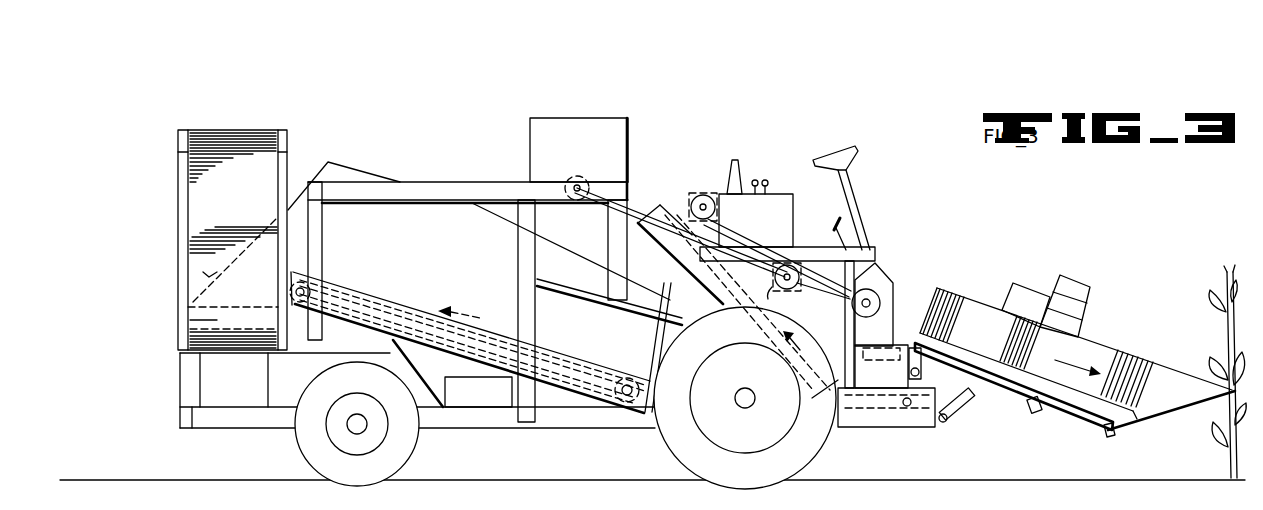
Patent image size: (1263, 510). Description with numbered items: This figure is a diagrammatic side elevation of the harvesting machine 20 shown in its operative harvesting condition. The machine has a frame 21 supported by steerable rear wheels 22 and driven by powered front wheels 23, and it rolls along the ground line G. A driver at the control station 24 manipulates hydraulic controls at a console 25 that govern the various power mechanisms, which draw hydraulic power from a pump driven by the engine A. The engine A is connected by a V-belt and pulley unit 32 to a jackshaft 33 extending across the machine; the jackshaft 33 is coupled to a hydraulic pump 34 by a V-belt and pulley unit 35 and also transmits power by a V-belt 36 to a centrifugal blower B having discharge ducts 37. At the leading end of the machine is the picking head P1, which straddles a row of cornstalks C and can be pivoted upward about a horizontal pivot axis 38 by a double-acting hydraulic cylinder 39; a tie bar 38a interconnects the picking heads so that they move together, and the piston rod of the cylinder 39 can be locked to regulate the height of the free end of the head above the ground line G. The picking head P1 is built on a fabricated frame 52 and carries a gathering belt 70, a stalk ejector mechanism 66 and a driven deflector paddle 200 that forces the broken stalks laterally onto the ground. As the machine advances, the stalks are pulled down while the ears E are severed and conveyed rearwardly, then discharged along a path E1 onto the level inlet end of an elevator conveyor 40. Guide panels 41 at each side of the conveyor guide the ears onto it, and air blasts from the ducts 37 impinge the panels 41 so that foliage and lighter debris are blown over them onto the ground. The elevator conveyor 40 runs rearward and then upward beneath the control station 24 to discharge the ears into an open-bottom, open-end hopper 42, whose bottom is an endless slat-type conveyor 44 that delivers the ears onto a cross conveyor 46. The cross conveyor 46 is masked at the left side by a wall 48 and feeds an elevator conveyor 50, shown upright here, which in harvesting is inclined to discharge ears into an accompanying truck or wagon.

The harvesting machine 20 is at (842, 107).
The frame 21 is at (196, 428).
The steerable rear wheels 22 is at (300, 455).
The powered front wheels 23 is at (672, 447).
The control station 24 is at (862, 178).
The console 25 is at (790, 190).
The V-belt and pulley unit 32 is at (638, 197).
The jackshaft 33 is at (808, 287).
The hydraulic pump 34 is at (706, 192).
The V-belt and pulley unit 35 is at (735, 222).
The V-belt 36 is at (832, 296).
The discharge ducts 37 is at (890, 341).
The horizontal pivot axis 38 is at (918, 372).
The tie bar 38a is at (1047, 416).
The double-acting hydraulic cylinder 39 is at (958, 415).
The elevator conveyor 40 is at (720, 347).
The guide panels 41 is at (834, 388).
The hopper 42 is at (437, 252).
The endless slat-type conveyor 44 is at (393, 306).
The cross conveyor 46 is at (232, 303).
The wall 48 is at (200, 272).
The elevator conveyor 50 is at (240, 203).
The fabricated frame 52 is at (1117, 428).
The stalk ejector mechanism 66 is at (1090, 326).
The gathering belt 70 is at (1102, 350).
The driven deflector paddle 200 is at (1094, 281).
The engine A is at (538, 117).
The centrifugal blower B is at (889, 272).
The cornstalks C is at (1222, 328).
The ears E is at (1207, 360).
The path E1 is at (886, 419).
The ground line G is at (503, 478).
The picking head P1 is at (1173, 414).